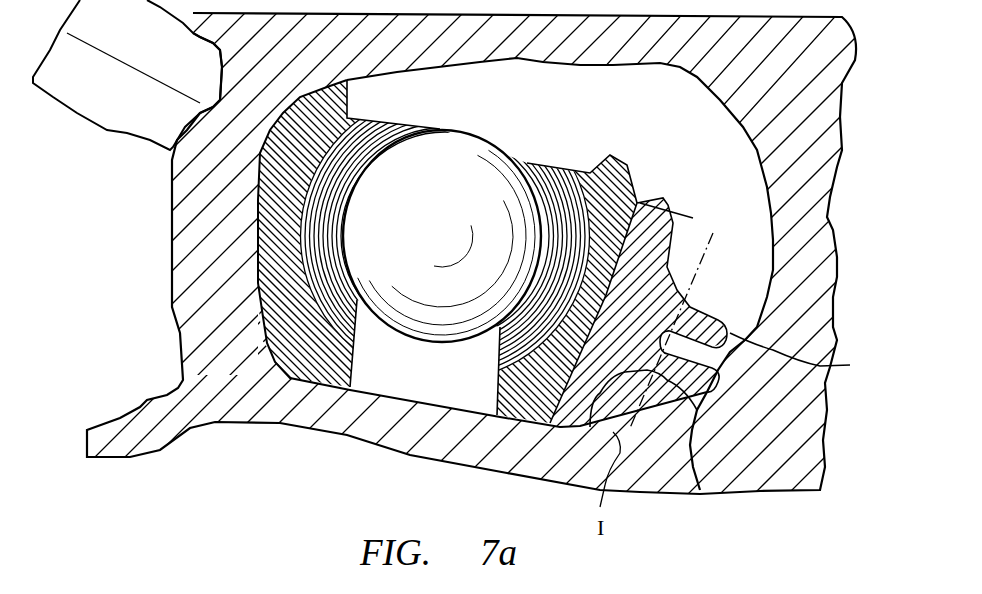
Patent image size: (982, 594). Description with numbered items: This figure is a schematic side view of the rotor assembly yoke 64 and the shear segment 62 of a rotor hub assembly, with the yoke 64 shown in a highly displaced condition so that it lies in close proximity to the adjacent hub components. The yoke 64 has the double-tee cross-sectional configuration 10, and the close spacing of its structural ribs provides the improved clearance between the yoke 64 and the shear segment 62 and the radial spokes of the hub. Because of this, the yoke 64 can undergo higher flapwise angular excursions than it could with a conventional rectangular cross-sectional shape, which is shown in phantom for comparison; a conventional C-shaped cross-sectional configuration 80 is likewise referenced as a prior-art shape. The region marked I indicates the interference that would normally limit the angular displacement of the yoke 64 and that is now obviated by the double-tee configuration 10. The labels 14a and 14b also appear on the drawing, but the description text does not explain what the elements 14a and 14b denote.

The valve assembly 10 is at (710, 300).
The first body portion 14a is at (850, 365).
The second body portion 14b is at (700, 490).
The housing 62 is at (192, 253).
The seat ring 64 is at (151, 45).
The centerline axis 80 is at (713, 232).